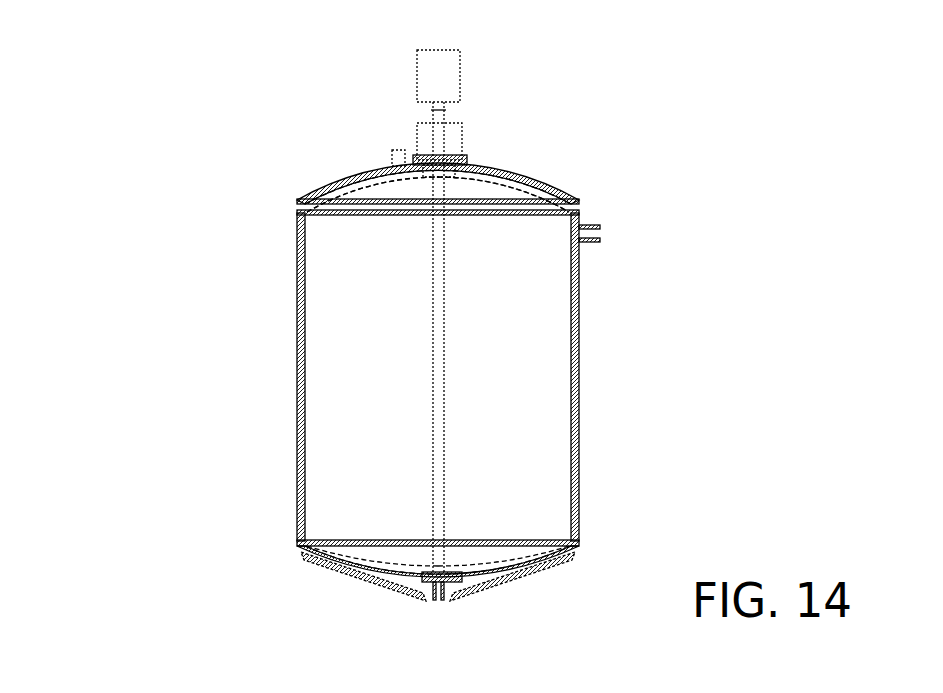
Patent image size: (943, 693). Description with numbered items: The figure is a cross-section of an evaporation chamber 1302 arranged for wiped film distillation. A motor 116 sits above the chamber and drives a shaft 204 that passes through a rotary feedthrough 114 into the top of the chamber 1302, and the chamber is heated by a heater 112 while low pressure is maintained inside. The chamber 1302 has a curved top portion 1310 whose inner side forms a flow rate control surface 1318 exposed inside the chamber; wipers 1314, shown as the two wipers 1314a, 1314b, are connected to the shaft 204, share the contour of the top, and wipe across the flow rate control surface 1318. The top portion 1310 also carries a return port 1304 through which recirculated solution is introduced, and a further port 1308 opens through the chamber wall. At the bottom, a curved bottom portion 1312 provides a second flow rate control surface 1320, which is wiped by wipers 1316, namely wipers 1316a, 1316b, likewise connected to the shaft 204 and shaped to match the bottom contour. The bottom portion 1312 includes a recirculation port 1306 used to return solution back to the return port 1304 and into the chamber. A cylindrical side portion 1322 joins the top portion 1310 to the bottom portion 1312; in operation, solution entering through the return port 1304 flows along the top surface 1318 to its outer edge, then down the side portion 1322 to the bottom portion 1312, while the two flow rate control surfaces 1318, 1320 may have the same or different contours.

The heater 112 is at (580, 558).
The rotary feedthrough 114 is at (462, 138).
The motor 116 is at (458, 75).
The shaft 204 is at (437, 363).
The evaporation chamber 1302 is at (315, 372).
The return port 1304 is at (398, 152).
The recirculation port 1306 is at (434, 608).
The side port 1308 is at (601, 233).
The curved top portion 1310 is at (481, 243).
The curved bottom portion 1312 is at (476, 539).
The wipers 1314 is at (472, 200).
The wiper 1314a is at (368, 188).
The wiper 1314b is at (502, 187).
The wipers 1316 is at (379, 519).
The wiper 1316a is at (385, 562).
The wiper 1316b is at (481, 563).
The flow rate control surface 1318 is at (548, 196).
The flow rate control surface 1320 is at (546, 548).
The cylindrical side portion 1322 is at (298, 425).